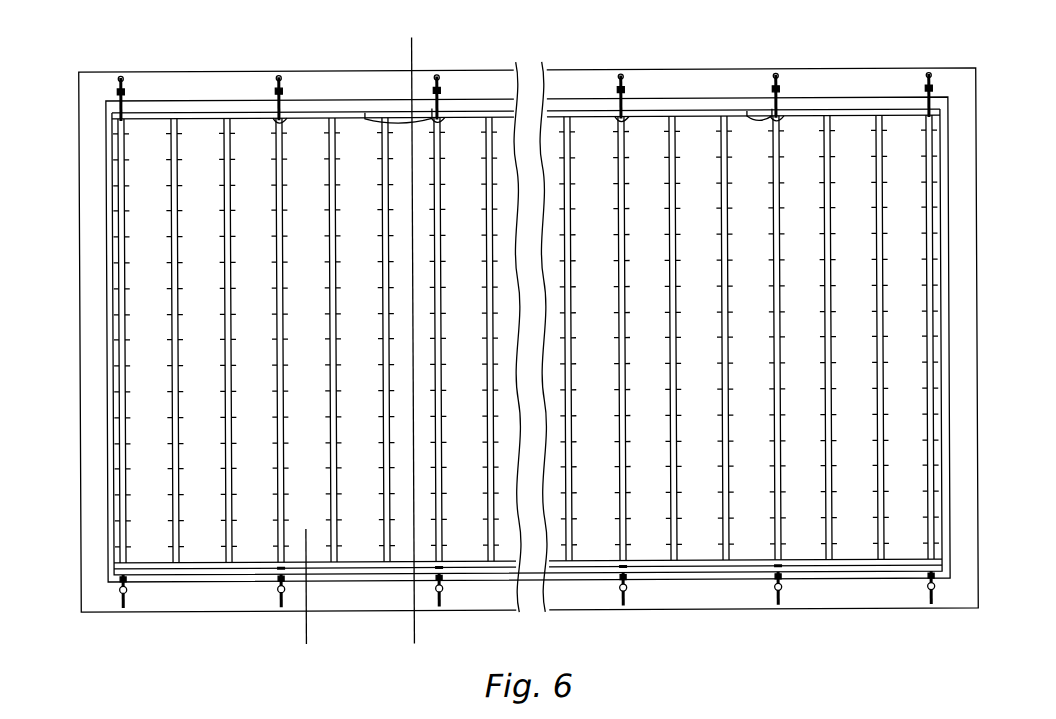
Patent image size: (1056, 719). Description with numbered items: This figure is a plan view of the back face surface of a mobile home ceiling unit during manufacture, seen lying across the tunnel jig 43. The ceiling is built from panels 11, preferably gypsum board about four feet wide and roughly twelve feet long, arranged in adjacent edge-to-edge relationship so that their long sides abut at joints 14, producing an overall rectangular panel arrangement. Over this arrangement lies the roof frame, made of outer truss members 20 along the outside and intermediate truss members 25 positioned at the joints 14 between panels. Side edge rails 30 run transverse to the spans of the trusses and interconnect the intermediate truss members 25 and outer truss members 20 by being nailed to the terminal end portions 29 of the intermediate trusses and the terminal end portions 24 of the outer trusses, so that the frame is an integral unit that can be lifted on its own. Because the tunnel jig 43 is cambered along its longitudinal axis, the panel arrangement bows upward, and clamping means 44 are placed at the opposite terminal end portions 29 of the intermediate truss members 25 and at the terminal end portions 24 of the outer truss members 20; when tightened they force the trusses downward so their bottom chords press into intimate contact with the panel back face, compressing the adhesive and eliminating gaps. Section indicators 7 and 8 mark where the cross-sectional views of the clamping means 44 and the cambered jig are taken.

The section line 7- 7 is at (305, 528).
The section line 8- 8 is at (413, 37).
The panels 11 is at (189, 244).
The joints 14 is at (278, 568).
The outer truss members 20 is at (120, 329).
The terminal end portions 24 is at (120, 120).
The intermediate truss members 25 is at (181, 413).
The terminal end portions 29 is at (287, 120).
The side edge rails 30 is at (544, 70).
The tunnel jig 43 is at (856, 599).
The clamping means 44 is at (126, 88).